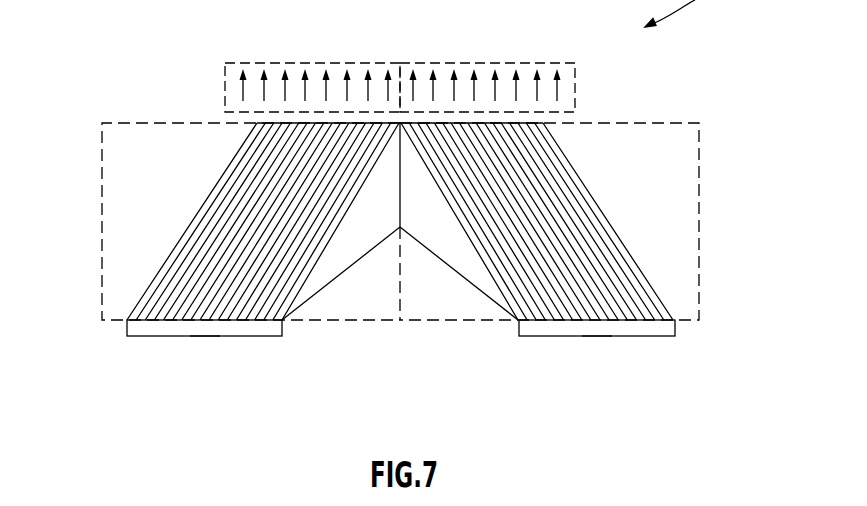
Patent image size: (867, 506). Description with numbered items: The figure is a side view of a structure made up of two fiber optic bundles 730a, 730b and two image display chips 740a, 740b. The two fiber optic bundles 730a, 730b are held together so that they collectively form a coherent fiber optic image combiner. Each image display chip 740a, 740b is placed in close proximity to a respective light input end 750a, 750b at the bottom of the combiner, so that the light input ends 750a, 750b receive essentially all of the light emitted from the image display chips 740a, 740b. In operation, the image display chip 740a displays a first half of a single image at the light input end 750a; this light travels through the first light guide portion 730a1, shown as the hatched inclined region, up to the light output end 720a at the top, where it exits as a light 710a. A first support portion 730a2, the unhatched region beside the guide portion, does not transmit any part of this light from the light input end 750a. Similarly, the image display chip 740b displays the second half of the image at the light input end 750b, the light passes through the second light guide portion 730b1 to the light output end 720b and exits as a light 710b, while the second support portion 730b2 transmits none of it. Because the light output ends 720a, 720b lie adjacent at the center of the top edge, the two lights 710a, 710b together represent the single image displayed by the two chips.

The light 710a is at (225, 63).
The light 710b is at (575, 63).
The light output end 720a is at (257, 123).
The light output end 720b is at (543, 123).
The fiber optic bundle 730a is at (102, 238).
The fiber optic bundle 730b is at (699, 238).
The first light guide portion 730a1 is at (212, 191).
The second light guide portion 730b1 is at (588, 191).
The first support portion 730a2 is at (397, 226).
The second support portion 730b2 is at (455, 226).
The image display chip 740a is at (127, 327).
The image display chip 740b is at (675, 327).
The light input end 750a is at (205, 320).
The light input end 750b is at (597, 320).